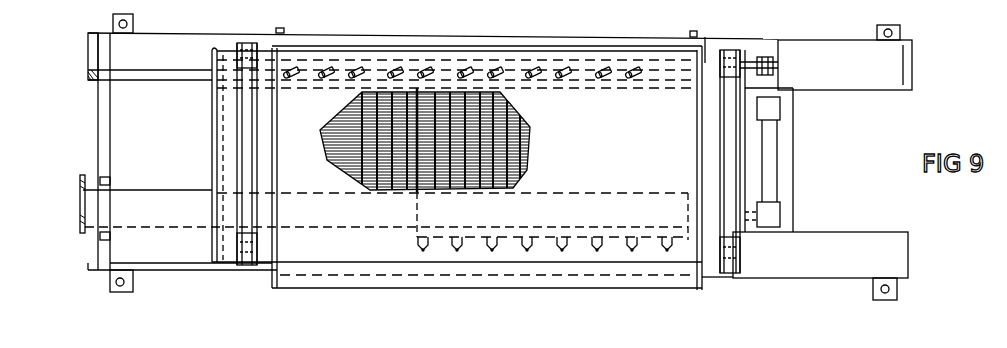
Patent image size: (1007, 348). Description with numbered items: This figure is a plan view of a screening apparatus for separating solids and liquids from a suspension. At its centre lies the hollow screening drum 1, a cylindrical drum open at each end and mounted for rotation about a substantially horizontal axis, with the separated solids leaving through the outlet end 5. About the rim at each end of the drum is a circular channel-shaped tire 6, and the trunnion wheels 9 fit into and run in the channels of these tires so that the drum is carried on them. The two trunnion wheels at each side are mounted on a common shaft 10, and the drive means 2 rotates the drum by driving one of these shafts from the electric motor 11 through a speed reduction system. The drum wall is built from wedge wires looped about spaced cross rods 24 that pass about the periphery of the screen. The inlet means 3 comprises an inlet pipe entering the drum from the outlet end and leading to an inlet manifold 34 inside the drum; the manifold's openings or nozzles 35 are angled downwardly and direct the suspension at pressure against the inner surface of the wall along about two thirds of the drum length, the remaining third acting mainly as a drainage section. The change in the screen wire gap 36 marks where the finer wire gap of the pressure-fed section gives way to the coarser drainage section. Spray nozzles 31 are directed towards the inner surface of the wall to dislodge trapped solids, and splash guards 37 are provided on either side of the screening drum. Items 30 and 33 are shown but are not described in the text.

The screening drum 1 is at (570, 37).
The drive means 2 is at (773, 42).
The inlet means 3 is at (177, 235).
The outlet end 5 is at (210, 128).
The tire 6 is at (245, 147).
The trunnion wheels 9 is at (245, 43).
The common shaft 10 is at (470, 62).
The electric motor 11 is at (850, 70).
The cross rods 24 is at (521, 115).
The guide rail 30 is at (183, 77).
The nozzles 31 is at (298, 68).
The support rod 33 is at (142, 168).
The inlet manifold 34 is at (595, 195).
The openings or nozzles 35 is at (592, 252).
The change in the screen wire gap 36 is at (419, 88).
The splash guards 37 is at (350, 33).